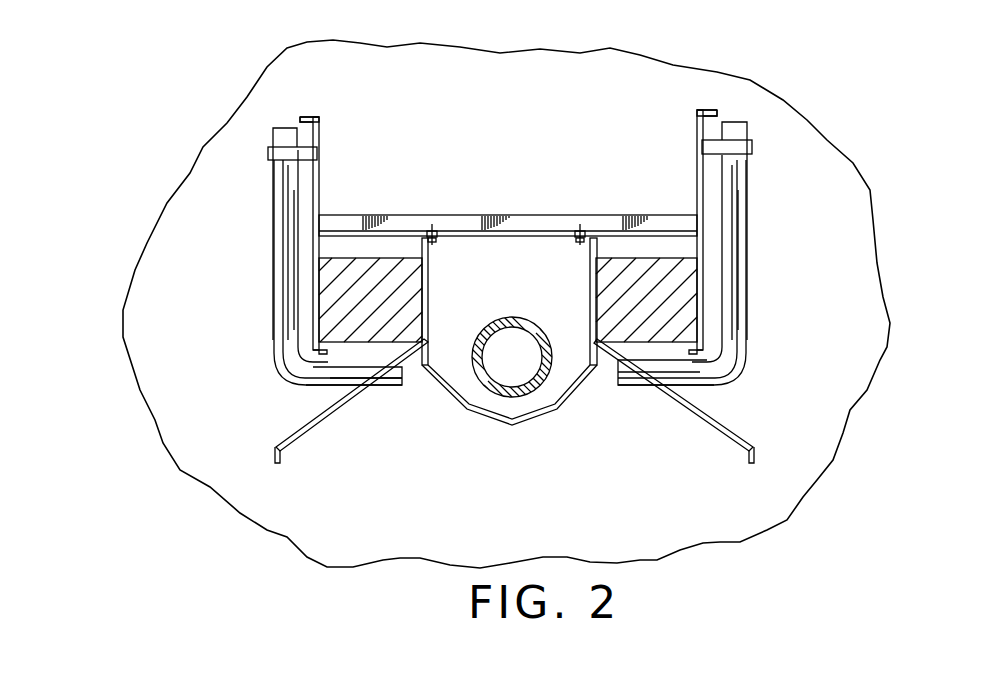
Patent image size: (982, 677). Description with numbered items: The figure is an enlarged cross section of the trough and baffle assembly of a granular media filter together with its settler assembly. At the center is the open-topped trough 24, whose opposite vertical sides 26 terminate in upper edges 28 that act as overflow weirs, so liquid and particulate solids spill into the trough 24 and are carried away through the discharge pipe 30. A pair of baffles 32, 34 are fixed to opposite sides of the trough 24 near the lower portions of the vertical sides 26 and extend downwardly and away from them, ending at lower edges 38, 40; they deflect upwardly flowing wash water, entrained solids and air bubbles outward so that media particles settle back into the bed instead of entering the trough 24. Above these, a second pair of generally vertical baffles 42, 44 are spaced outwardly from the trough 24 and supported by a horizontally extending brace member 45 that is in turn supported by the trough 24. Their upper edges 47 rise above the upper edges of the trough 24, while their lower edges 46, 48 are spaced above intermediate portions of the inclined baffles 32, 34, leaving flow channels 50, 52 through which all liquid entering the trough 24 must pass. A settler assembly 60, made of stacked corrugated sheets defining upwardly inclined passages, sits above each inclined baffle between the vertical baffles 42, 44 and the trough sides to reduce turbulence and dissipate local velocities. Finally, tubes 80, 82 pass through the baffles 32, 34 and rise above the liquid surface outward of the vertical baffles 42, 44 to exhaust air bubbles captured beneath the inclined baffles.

The trough 24 is at (478, 238).
The vertical sides 26 is at (432, 292).
The upper edges 28 is at (426, 240).
The discharge pipe 30 is at (535, 395).
The baffle 32 is at (340, 405).
The baffle 34 is at (690, 410).
The lower edge 38 is at (278, 463).
The lower edge 40 is at (752, 460).
The vertical baffle 42 is at (320, 187).
The vertical baffle 44 is at (695, 197).
The brace member 45 is at (615, 218).
The lower edge 46 is at (300, 350).
The upper edges 47 is at (318, 118).
The lower edge 48 is at (737, 350).
The flow channel 50 is at (350, 357).
The flow channel 52 is at (670, 352).
The settler assembly 60 is at (343, 292).
The tube 80 is at (283, 238).
The tube 82 is at (735, 230).